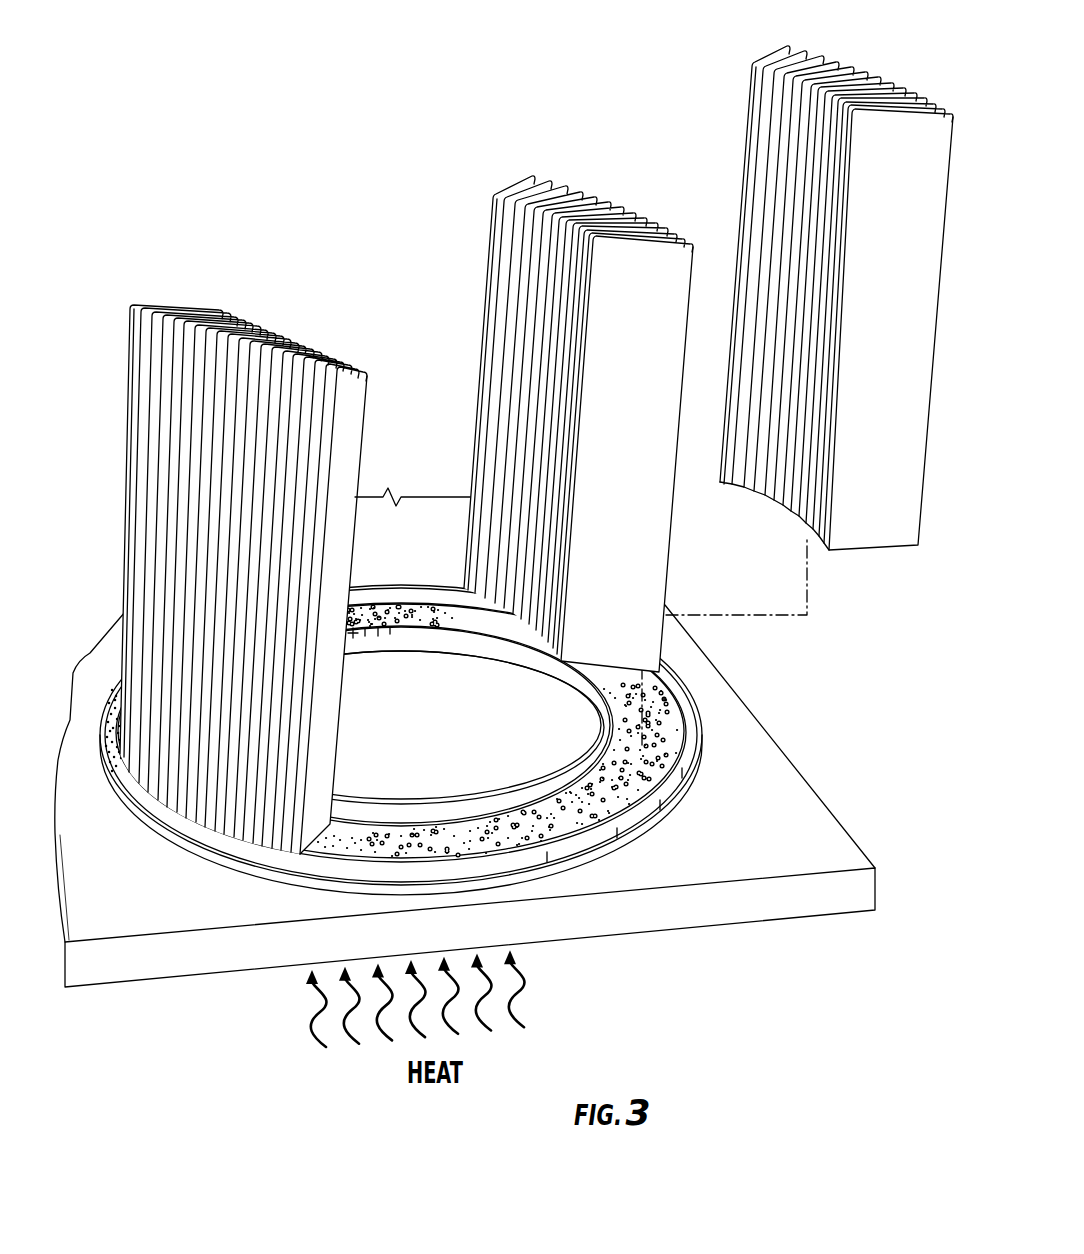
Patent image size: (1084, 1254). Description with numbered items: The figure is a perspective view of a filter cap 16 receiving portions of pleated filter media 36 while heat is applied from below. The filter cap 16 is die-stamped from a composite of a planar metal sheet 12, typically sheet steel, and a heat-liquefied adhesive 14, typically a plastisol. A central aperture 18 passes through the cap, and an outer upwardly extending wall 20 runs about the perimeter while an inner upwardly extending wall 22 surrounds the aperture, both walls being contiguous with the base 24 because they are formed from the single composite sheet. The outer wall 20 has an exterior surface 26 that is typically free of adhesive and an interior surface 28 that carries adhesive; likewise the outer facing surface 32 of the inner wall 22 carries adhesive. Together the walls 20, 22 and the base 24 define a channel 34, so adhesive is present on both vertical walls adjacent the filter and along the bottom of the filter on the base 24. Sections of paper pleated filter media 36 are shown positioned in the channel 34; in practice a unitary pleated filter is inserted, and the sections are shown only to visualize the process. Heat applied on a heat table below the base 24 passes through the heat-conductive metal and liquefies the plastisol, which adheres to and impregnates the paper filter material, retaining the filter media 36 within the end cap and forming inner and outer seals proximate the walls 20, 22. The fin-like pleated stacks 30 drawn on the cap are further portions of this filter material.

The planar metal sheet 12 is at (447, 716).
The adhesive 14 is at (113, 687).
The filter cap 16 is at (477, 740).
The aperture 18 is at (432, 688).
The outer upwardly extending wall 20 is at (570, 857).
The inner upwardly extending wall 22 is at (495, 796).
The base 24 is at (352, 830).
The exterior surface 26 is at (667, 806).
The interior surface 28 is at (362, 600).
The fin stack 30 is at (353, 637).
The outer facing surface 32 is at (350, 813).
The channel 34 is at (611, 808).
The filter media 36 is at (888, 192).